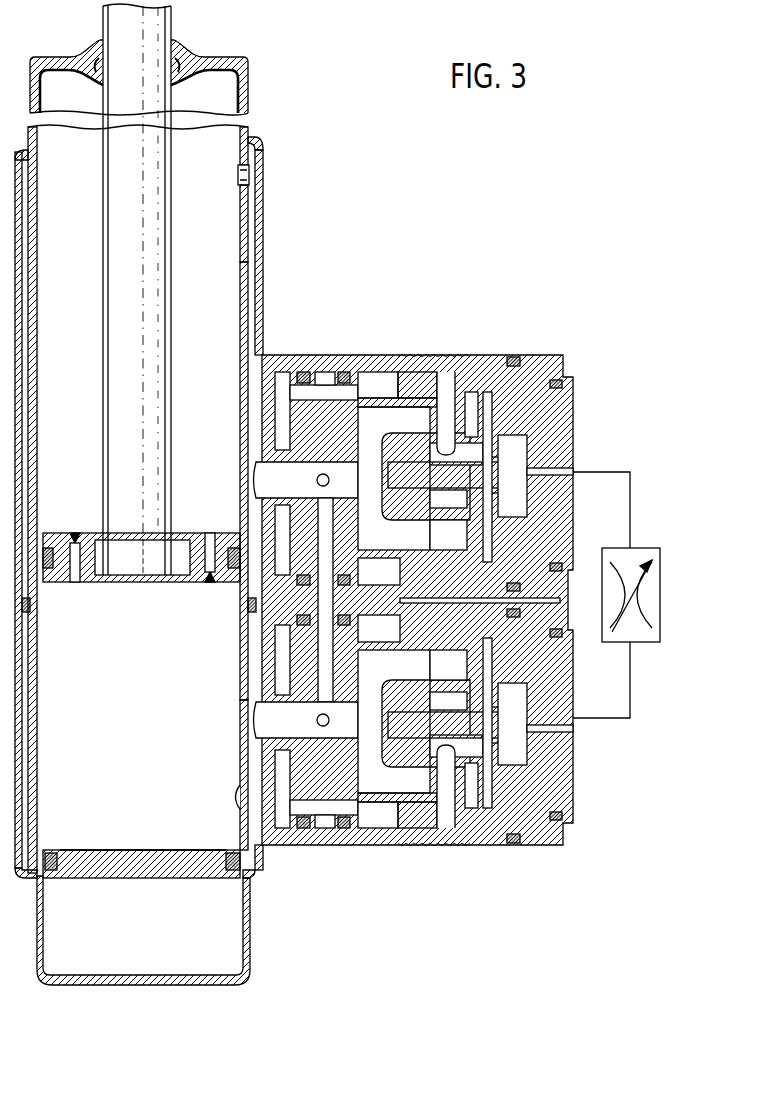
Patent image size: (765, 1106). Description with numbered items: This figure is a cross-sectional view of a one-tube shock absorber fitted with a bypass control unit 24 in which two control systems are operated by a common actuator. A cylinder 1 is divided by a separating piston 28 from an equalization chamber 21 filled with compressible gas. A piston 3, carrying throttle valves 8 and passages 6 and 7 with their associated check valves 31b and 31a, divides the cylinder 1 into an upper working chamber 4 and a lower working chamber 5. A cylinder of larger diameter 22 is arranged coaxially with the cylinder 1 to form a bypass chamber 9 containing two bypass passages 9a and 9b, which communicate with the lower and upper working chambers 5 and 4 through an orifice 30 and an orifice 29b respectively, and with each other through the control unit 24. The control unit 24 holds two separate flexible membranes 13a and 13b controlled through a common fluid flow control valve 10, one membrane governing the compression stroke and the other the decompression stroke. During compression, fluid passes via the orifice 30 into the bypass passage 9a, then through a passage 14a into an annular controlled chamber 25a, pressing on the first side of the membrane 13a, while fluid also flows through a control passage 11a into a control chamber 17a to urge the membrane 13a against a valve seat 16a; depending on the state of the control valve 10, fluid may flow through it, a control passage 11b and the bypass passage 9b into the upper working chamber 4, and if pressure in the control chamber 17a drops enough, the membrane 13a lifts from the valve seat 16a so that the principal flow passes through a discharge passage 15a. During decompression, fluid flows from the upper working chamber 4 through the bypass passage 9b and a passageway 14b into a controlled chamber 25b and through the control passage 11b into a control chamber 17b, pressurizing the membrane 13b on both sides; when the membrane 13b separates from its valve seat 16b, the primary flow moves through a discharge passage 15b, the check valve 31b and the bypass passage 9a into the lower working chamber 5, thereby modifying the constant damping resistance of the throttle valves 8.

The cylinder 1 is at (248, 134).
The piston 3 is at (93, 553).
The upper working chamber 4 is at (222, 263).
The lower working chamber 5 is at (203, 842).
The passage 6 is at (74, 580).
The passage 7 is at (210, 542).
The throttle valves 8 is at (98, 545).
The bypass chamber 9 is at (250, 291).
The bypass passage 9a is at (255, 774).
The bypass passage 9b is at (248, 201).
The fluid flow control valve 10 is at (642, 548).
The control passage 11a is at (500, 750).
The control passage 11b is at (505, 468).
The flexible membrane 13a is at (523, 825).
The flexible membrane 13b is at (490, 437).
The passage 14a is at (450, 778).
The passageway 14b is at (452, 535).
The discharge passage 15a is at (470, 722).
The discharge passage 15b is at (445, 396).
The valve seat 16a is at (455, 692).
The valve seat 16b is at (468, 427).
The control chamber 17a is at (520, 748).
The control chamber 17b is at (518, 478).
The equalization chamber 21 is at (190, 951).
The cylinder of larger diameter 22 is at (260, 229).
The bypass control unit 24 is at (588, 386).
The annular controlled chamber 25a is at (478, 795).
The controlled chamber 25b is at (443, 433).
The separating piston 28 is at (88, 870).
The orifice 29b is at (246, 174).
The orifice 30 is at (238, 798).
The check valve 31a is at (410, 840).
The check valve 31b is at (398, 385).